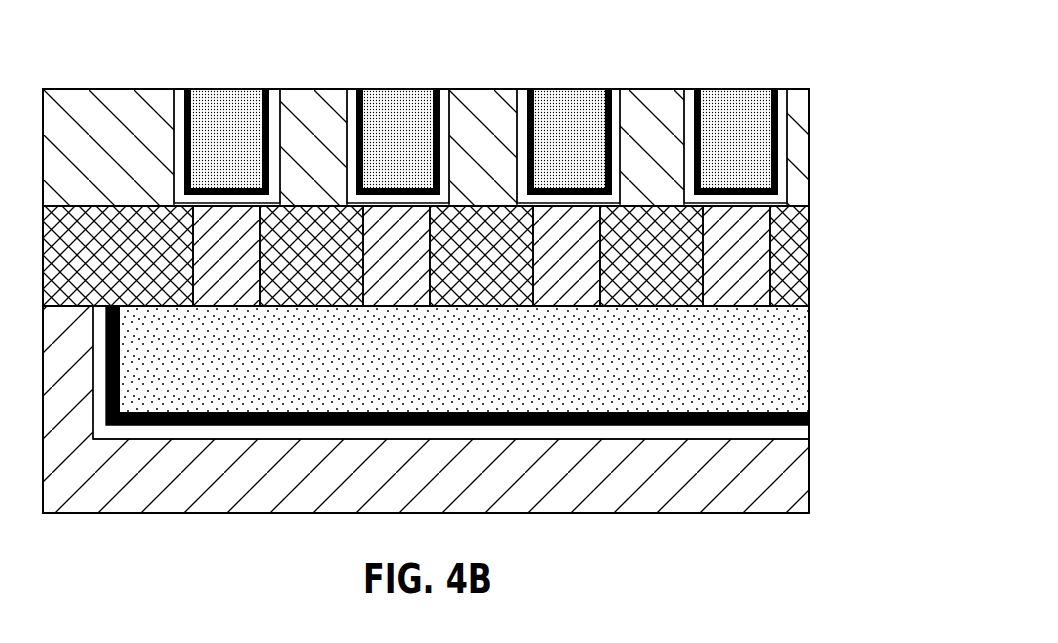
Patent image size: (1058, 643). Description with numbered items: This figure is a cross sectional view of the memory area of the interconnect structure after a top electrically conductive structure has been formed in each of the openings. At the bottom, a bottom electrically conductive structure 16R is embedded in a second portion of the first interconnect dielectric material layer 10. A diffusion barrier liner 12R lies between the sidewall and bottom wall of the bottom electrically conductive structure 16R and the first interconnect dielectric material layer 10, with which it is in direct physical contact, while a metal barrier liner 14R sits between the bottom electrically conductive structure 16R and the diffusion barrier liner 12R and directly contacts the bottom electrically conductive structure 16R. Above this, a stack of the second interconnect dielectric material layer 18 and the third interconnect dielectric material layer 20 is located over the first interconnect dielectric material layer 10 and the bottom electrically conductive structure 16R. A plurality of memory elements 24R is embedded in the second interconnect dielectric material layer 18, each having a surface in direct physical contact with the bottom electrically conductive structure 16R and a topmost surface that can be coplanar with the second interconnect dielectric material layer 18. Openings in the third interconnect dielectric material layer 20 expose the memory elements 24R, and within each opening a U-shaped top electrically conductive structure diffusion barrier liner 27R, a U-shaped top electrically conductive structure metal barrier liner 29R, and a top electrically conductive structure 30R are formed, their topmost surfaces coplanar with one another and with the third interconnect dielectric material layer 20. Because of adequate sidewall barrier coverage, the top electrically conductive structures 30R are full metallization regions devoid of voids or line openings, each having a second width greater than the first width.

The first interconnect dielectric material layer 10 is at (475, 494).
The diffusion barrier liner 12R is at (797, 432).
The metal barrier liner 14R is at (797, 419).
The bottom electrically conductive structure 16R is at (482, 369).
The second interconnect dielectric material layer 18 is at (665, 267).
The third interconnect dielectric material layer 20 is at (666, 161).
The memory elements 24R is at (760, 267).
The top electrically conductive structure diffusion barrier liner 27R is at (782, 98).
The top electrically conductive structure metal barrier liner 29R is at (696, 98).
The top electrically conductive structures 30R is at (756, 151).